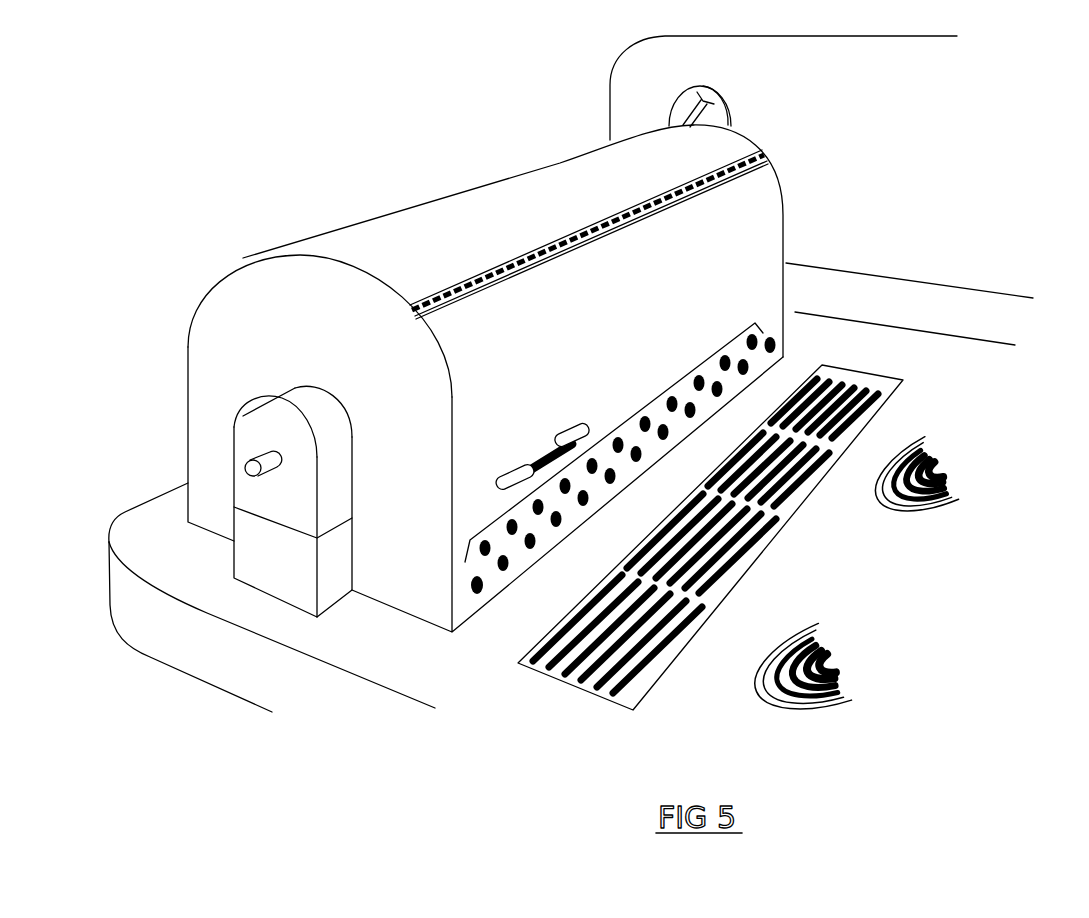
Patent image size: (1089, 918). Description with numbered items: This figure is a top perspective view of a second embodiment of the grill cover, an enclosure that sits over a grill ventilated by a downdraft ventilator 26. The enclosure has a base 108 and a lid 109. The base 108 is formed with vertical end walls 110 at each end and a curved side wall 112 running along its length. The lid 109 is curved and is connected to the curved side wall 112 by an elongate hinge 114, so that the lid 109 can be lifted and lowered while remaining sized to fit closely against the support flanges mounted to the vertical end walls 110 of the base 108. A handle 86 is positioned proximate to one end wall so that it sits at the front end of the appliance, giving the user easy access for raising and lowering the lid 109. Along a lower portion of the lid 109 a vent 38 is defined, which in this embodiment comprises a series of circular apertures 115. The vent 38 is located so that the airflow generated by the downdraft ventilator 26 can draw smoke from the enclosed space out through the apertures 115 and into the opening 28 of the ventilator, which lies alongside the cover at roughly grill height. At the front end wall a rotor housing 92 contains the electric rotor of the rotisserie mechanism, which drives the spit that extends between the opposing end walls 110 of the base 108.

The downdraft ventilator 26 is at (790, 517).
The opening of the ventilator 28 is at (836, 368).
The vent 38 is at (647, 400).
The handle 86 is at (517, 474).
The rotor housing 92 is at (248, 435).
The base 108 is at (242, 280).
The lid 109 is at (742, 203).
The vertical end walls 110 is at (750, 137).
The curved side wall 112 is at (407, 227).
The elongate hinge 114 is at (547, 240).
The circular apertures 115 is at (477, 594).